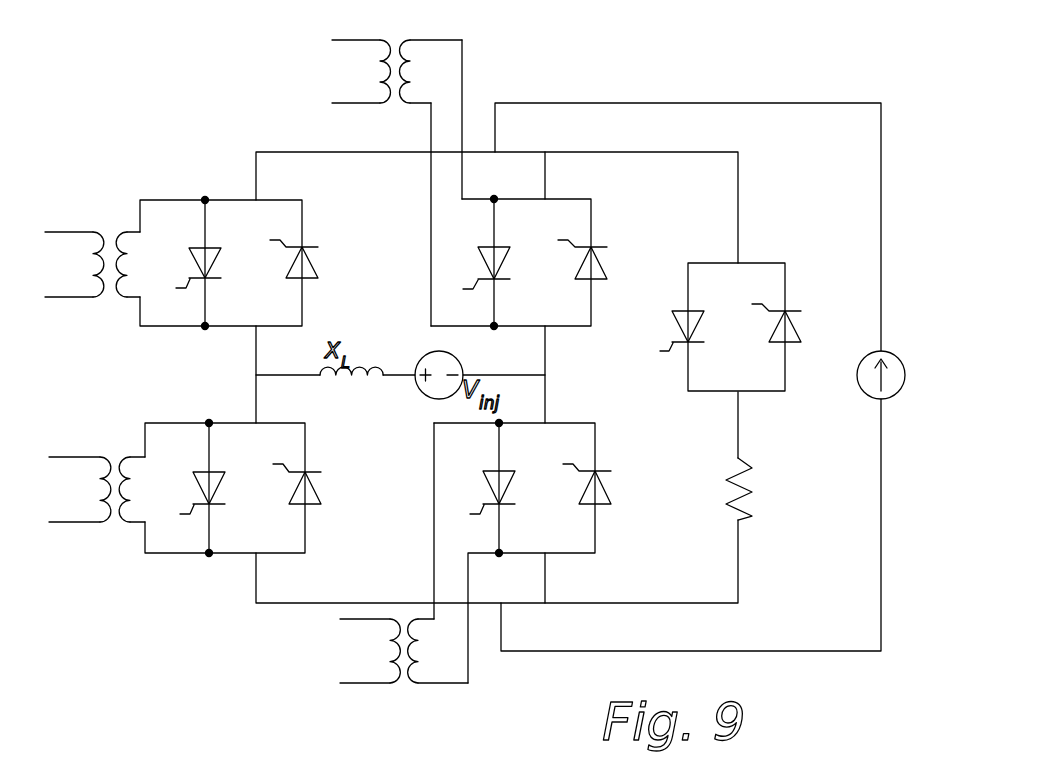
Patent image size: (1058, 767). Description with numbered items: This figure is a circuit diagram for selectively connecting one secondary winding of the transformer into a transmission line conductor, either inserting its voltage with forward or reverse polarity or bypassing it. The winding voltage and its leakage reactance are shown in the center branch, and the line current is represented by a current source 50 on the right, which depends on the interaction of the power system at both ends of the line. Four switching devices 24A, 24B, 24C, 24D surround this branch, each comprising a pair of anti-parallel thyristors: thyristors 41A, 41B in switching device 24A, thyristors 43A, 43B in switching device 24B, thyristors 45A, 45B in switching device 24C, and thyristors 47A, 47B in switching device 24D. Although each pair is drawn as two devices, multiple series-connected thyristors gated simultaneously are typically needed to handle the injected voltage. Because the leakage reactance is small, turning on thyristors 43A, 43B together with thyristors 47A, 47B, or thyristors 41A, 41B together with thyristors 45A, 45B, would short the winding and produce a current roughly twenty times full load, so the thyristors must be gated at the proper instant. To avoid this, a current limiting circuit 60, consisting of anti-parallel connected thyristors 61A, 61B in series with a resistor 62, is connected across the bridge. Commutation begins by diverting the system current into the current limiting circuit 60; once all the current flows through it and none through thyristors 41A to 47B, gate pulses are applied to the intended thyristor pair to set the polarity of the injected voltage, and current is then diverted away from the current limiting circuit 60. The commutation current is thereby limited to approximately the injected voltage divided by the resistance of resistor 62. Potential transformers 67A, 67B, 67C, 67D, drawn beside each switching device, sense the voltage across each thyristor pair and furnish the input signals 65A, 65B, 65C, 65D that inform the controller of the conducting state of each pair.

The switching device 24A is at (265, 253).
The switching device 24B is at (272, 503).
The switching device 24C is at (522, 255).
The switching device 24D is at (567, 552).
The thyristor 41A is at (202, 247).
The thyristor 41B is at (308, 266).
The thyristor 43A is at (207, 471).
The thyristor 43B is at (311, 505).
The thyristor 45A is at (480, 247).
The thyristor 45B is at (600, 262).
The thyristor 47A is at (501, 471).
The thyristor 47B is at (603, 505).
The current source 50 is at (870, 400).
The current limiting circuit 60 is at (726, 290).
The thyristor 61A is at (673, 311).
The thyristor 61B is at (790, 343).
The resistor 62 is at (744, 460).
The input signal 65A is at (70, 231).
The input signal 65B is at (100, 522).
The input signal 65C is at (364, 33).
The input signal 65D is at (390, 683).
The potential transformer 67A is at (120, 297).
The potential transformer 67B is at (128, 522).
The potential transformer 67C is at (425, 40).
The potential transformer 67D is at (415, 683).